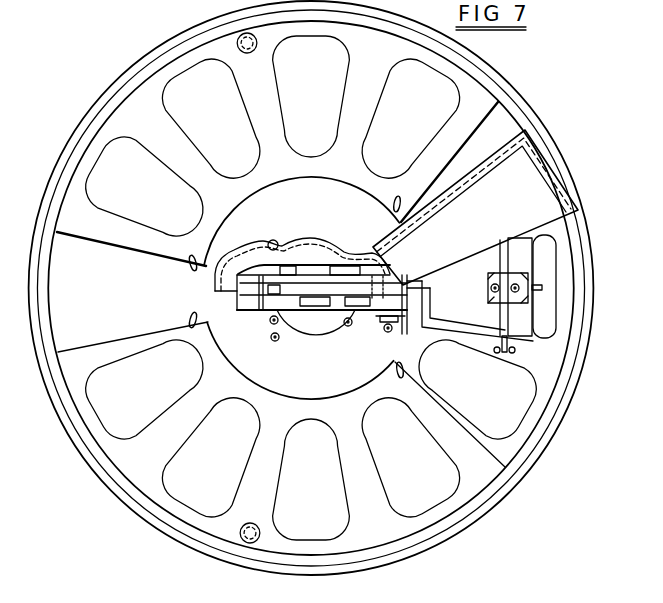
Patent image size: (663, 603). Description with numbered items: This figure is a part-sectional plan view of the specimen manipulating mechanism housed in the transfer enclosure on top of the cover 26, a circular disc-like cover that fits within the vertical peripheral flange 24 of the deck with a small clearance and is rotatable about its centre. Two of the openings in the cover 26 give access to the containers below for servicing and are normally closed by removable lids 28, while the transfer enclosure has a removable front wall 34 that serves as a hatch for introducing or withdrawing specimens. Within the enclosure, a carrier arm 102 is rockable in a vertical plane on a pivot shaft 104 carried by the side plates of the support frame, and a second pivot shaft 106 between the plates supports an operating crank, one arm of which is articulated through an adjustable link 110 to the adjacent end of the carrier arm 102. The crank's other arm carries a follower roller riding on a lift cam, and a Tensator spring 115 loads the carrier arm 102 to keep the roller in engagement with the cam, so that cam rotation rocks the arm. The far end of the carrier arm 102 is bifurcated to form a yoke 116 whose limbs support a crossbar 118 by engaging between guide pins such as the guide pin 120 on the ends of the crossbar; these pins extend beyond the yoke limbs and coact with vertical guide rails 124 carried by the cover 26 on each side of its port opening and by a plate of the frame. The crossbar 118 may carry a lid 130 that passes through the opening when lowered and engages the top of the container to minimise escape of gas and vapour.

The peripheral flange 24 is at (542, 460).
The cover 26 is at (523, 420).
The lids 28 is at (276, 90).
The front wall 34 is at (516, 203).
The carrier arm 102 is at (297, 309).
The pivot shaft 104 is at (308, 313).
The pivot shaft 106 is at (340, 302).
The adjustable link 110 is at (268, 288).
The Tensator spring 115 is at (367, 305).
The yoke 116 is at (466, 340).
The crossbar 118 is at (500, 317).
The guide pin 120 is at (495, 346).
The guide rails 124 is at (513, 355).
The lid 130 is at (546, 322).